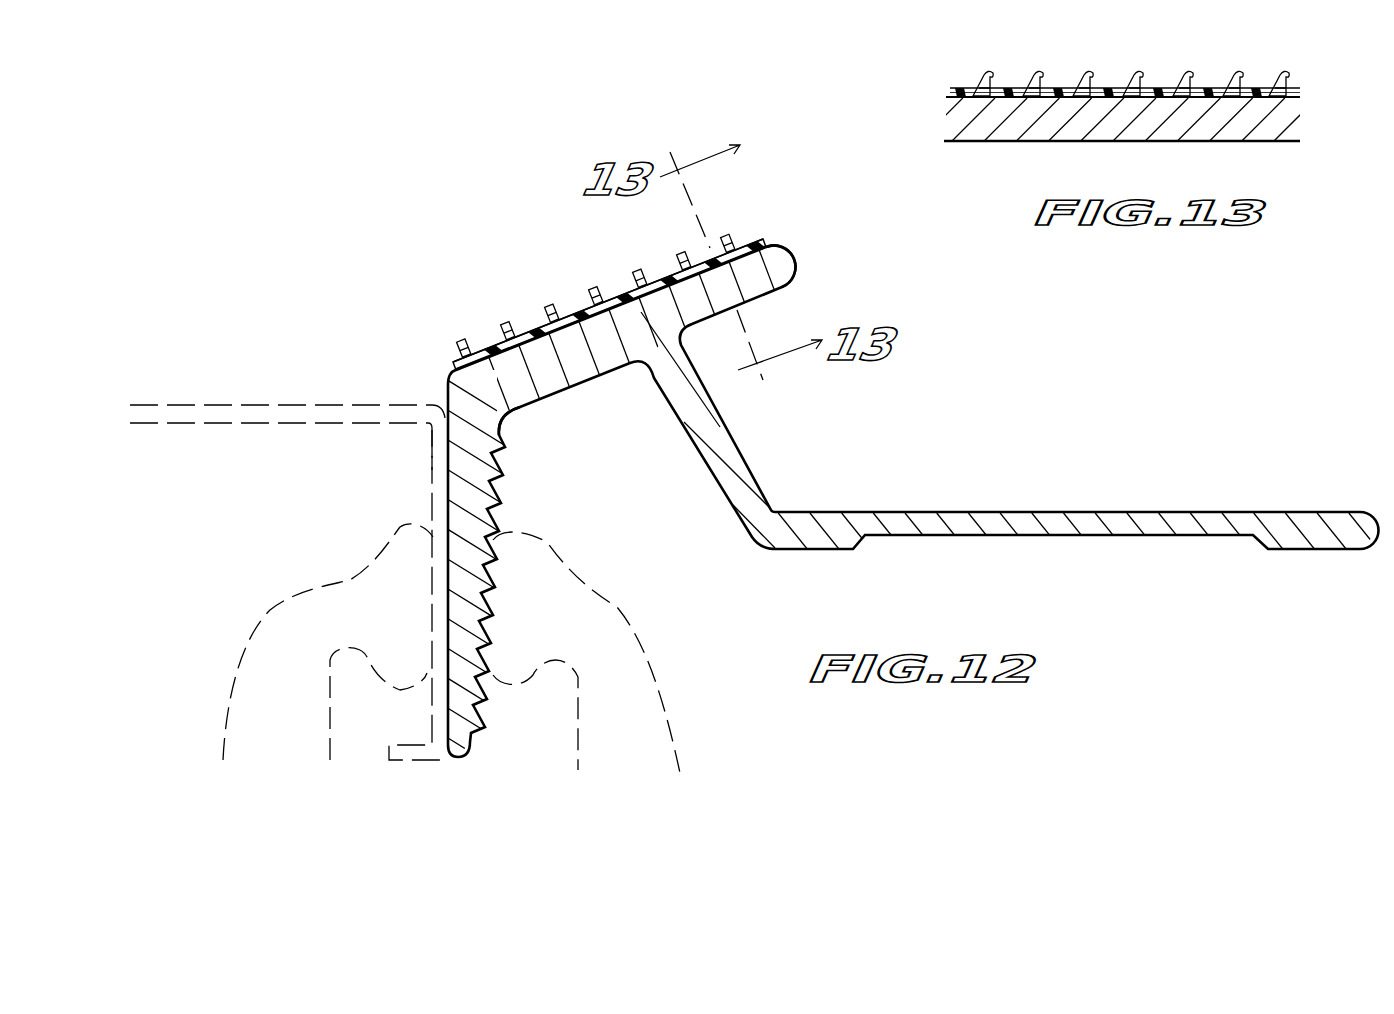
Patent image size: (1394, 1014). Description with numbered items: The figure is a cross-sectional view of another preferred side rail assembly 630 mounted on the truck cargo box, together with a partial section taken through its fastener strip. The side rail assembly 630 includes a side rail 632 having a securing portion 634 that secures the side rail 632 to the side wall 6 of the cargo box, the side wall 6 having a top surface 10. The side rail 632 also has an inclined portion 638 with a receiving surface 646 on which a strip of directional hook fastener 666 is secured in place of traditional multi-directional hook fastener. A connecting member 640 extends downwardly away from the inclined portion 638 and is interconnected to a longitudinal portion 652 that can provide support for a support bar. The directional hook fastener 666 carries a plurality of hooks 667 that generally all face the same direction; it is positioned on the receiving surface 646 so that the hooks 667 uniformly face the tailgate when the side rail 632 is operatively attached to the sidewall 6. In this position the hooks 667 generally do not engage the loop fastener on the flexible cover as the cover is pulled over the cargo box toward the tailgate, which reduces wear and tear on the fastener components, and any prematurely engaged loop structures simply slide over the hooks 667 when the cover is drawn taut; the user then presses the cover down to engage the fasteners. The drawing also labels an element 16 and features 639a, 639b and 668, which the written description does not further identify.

In FIG. 12, the sidewall 6 is at (430, 458).
In FIG. 12, the top surface 10 is at (300, 395).
In FIG. 12, the weatherstrip 16 is at (280, 610).
In FIG. 12, the side rail assembly 630 is at (796, 246).
In FIG. 12, the side rail 632 is at (1081, 499).
In FIG. 12, the securing portion 634 is at (503, 492).
In FIG. 12, the inclined portion 638 is at (787, 293).
In FIG. 13, the inclined portion 638 is at (1275, 142).
In FIG. 12, the inner corner 639a is at (517, 412).
In FIG. 12, the rounded end 639b is at (800, 262).
In FIG. 12, the connecting member 640 is at (743, 463).
In FIG. 12, the receiving surface 646 is at (527, 336).
In FIG. 13, the receiving surface 646 is at (1098, 95).
In FIG. 12, the longitudinal portion 652 is at (1172, 512).
In FIG. 12, the directional hook fastener 666 is at (452, 342).
In FIG. 13, the directional hook fastener 666 is at (970, 76).
In FIG. 12, the hooks 667 is at (508, 320).
In FIG. 13, the hooks 667 is at (1140, 72).
In FIG. 12, the backing layer 668 is at (760, 238).
In FIG. 13, the backing layer 668 is at (1301, 95).